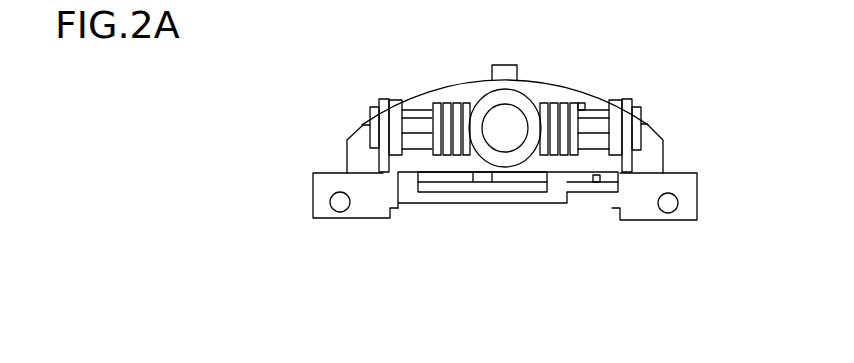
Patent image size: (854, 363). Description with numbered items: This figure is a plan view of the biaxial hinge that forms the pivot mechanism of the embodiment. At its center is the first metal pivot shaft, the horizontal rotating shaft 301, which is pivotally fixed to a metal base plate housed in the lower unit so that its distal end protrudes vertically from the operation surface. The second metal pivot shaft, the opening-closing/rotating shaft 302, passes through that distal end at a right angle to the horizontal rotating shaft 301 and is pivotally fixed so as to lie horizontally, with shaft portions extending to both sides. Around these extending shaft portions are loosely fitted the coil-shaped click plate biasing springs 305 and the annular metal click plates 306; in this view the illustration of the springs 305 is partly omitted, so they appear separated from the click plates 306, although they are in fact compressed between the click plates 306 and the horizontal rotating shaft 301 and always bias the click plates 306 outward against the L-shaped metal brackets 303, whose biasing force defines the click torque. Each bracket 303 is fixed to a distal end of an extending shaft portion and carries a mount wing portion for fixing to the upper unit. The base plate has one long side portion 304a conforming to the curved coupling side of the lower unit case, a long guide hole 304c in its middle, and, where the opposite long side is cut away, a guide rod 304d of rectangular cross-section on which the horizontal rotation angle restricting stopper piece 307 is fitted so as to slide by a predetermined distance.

The first metal pivot shaft 301 is at (517, 103).
The second metal pivot shaft 302 is at (417, 110).
The L-shaped metal bracket 303 is at (357, 219).
The long side portion of the base plate 304a is at (362, 128).
The long guide hole 304c is at (597, 182).
The guide rod 304d is at (577, 193).
The click plate biasing spring 305 is at (457, 103).
The click plate 306 is at (394, 100).
The horizontal rotation angle restricting stopper piece 307 is at (483, 198).